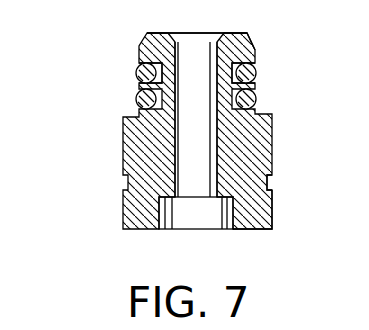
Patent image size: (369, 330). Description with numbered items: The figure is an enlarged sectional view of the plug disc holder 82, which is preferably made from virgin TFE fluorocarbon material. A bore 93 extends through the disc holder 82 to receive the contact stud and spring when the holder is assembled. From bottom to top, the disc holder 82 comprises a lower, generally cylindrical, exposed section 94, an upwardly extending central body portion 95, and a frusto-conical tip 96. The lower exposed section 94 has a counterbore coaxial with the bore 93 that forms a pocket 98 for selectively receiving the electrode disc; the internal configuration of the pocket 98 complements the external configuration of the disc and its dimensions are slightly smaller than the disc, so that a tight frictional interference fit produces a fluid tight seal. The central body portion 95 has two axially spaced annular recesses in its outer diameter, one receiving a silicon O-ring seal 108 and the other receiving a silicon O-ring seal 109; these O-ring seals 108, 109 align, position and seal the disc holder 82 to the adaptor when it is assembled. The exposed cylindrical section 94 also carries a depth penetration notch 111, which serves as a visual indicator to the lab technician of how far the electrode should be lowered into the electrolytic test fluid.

The plug disc holder 82 is at (116, 136).
The bore 93 is at (212, 113).
The lower exposed section 94 is at (272, 228).
The body portion 95 is at (257, 82).
The frusto-conical tip 96 is at (252, 40).
The pocket 98 is at (172, 210).
The O-ring seal 108 is at (256, 66).
The O-ring seal 109 is at (257, 107).
The depth penetration notch 111 is at (272, 182).